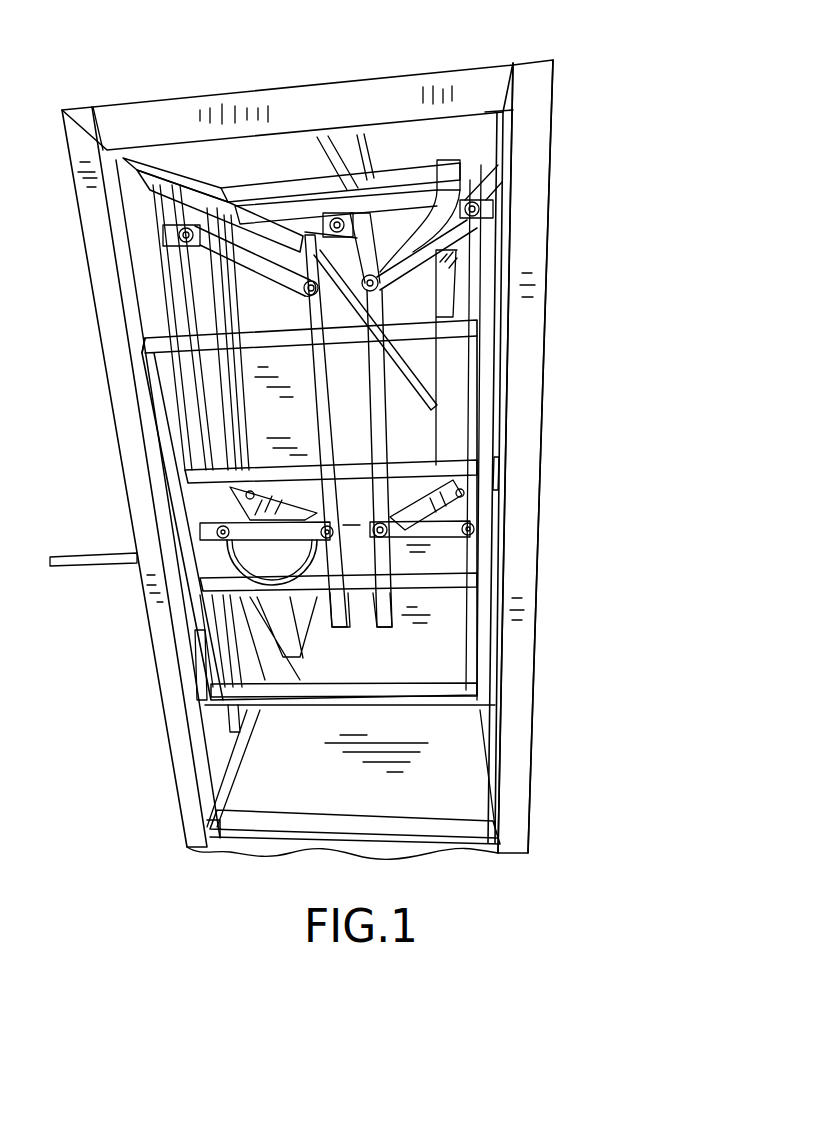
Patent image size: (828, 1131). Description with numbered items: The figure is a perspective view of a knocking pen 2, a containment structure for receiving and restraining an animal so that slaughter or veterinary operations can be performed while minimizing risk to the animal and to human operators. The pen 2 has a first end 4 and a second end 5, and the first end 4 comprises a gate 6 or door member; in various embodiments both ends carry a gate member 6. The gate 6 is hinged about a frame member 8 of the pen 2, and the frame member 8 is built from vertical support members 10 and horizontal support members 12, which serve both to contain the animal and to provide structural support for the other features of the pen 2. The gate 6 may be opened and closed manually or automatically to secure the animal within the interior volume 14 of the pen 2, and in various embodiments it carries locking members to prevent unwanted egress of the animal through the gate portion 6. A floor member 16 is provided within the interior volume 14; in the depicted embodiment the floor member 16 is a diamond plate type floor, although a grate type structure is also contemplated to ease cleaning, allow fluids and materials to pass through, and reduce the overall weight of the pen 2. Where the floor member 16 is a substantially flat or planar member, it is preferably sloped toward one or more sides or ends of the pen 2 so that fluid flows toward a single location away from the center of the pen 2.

The knocking pen 2 is at (628, 103).
The first end 4 is at (150, 737).
The second end 5 is at (440, 356).
The gate 6 is at (458, 690).
The frame member 8 is at (527, 528).
The vertical support member 10 is at (122, 392).
The horizontal support member 12 is at (140, 165).
The interior volume 14 is at (413, 433).
The floor member 16 is at (462, 795).